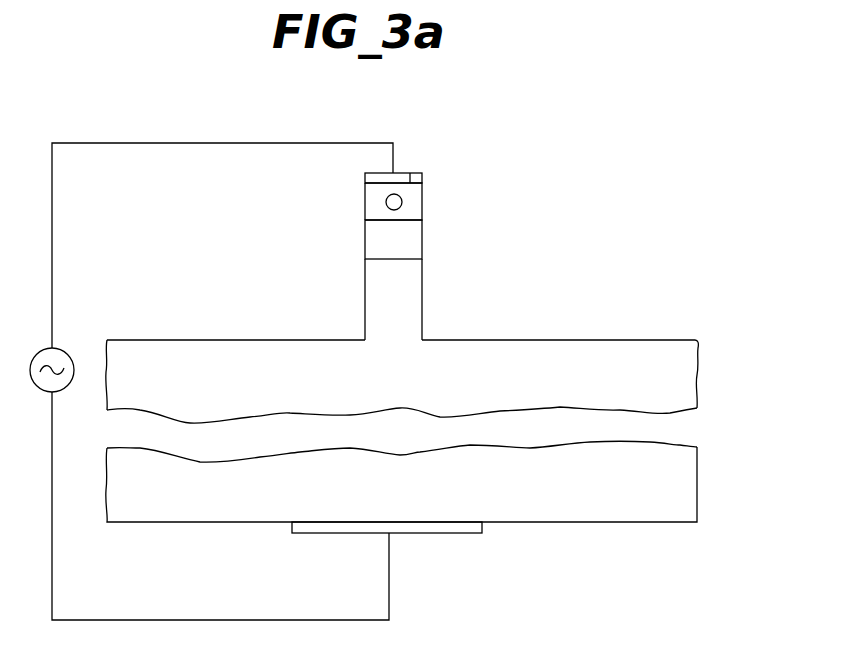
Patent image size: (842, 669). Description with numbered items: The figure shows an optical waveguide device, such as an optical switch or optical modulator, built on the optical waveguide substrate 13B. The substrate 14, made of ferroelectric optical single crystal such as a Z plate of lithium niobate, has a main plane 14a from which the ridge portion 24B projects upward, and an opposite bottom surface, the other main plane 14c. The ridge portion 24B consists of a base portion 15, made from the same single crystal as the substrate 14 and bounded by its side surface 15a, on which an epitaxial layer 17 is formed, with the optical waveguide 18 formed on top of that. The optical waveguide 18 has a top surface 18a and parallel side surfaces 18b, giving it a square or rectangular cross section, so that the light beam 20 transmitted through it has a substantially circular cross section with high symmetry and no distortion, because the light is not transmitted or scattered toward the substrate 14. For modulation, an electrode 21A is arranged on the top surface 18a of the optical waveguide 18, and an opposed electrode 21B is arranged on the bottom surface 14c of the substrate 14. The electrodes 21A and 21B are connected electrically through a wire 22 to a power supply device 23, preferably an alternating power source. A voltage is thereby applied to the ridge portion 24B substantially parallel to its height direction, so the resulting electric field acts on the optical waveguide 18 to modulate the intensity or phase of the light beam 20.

The optical waveguide substrate 13B is at (683, 290).
The substrate 14 is at (708, 333).
The main plane 14a is at (577, 340).
The other main plane 14c is at (537, 523).
The base portion 15 is at (413, 300).
The side surface of support member 15a is at (365, 304).
The epitaxial layer 17 is at (413, 248).
The optical waveguide 18 is at (412, 197).
The top surface 18a is at (416, 173).
The side surfaces 18b is at (365, 207).
The light beam 20 is at (399, 204).
The electrode 21A is at (405, 173).
The electrode 21B is at (356, 527).
The wire 22 is at (208, 144).
The power supply device 23 is at (68, 359).
The ridge portion 24B is at (447, 170).